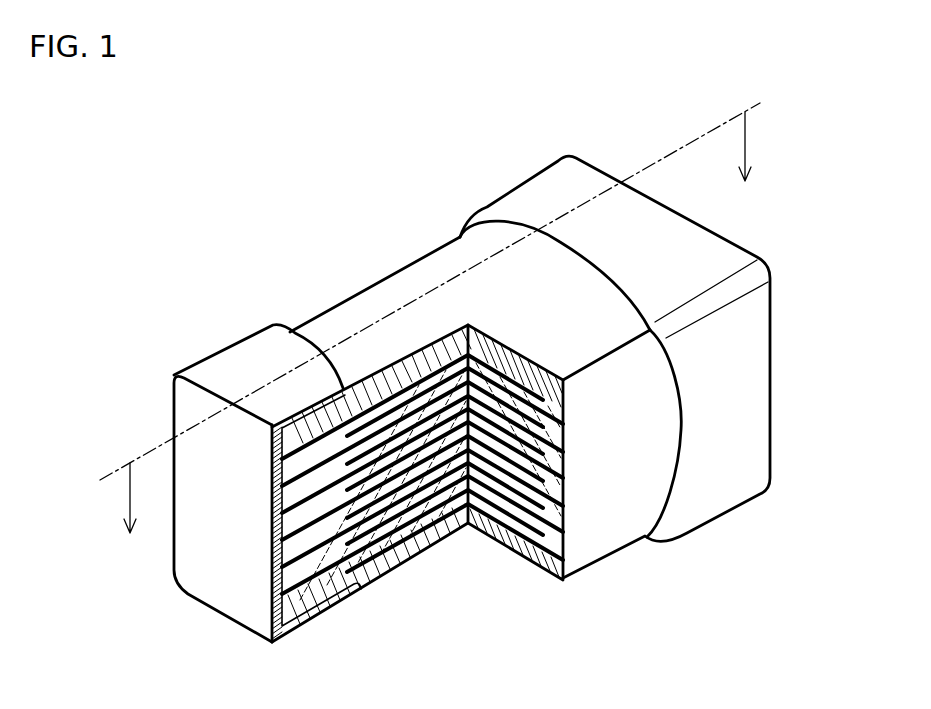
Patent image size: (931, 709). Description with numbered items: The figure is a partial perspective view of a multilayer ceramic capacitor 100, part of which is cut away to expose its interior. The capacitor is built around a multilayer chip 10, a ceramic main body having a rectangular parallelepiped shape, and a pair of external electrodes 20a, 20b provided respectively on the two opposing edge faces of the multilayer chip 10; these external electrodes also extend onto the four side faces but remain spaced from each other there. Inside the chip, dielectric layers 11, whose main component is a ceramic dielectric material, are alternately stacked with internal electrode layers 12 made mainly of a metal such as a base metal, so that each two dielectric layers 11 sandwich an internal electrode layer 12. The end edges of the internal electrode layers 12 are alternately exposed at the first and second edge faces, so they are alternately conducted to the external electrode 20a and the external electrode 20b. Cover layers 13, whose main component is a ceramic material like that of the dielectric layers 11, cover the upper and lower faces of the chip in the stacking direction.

The multilayer ceramic capacitor 100 is at (869, 89).
The multilayer chip 10 is at (321, 303).
The dielectric layer 11 is at (389, 535).
The internal electrode layer 12 is at (422, 505).
The cover layer 13 is at (440, 267).
The external electrode 20a is at (233, 343).
The external electrode 20b is at (523, 197).